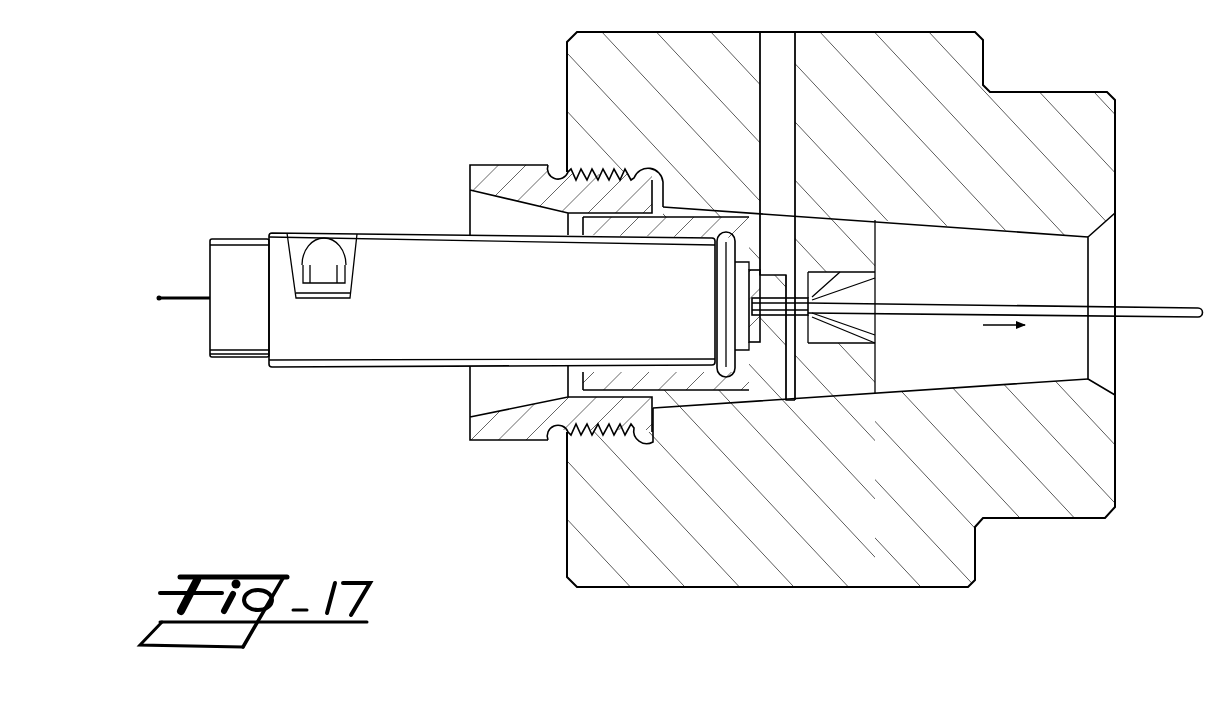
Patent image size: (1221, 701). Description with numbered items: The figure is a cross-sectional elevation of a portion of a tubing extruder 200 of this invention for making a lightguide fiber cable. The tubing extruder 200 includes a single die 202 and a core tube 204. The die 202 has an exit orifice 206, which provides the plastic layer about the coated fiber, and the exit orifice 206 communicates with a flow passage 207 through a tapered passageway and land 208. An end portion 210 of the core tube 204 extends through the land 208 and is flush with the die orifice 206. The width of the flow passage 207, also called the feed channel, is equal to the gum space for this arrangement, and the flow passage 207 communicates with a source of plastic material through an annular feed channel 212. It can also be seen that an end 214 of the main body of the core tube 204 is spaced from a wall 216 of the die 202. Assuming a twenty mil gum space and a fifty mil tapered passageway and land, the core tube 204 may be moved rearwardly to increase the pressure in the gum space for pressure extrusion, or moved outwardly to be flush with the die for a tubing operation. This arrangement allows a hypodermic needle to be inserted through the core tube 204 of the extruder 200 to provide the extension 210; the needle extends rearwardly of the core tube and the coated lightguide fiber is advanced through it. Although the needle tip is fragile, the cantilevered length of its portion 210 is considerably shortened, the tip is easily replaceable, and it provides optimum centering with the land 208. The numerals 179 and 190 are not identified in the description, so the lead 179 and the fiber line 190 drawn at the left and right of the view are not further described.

The electrical lead 179 is at (172, 294).
The optical fiber 190 is at (1152, 303).
The tubing extruder 200 is at (490, 55).
The die 202 is at (832, 212).
The core tube 204 is at (415, 335).
The exit orifice 206 is at (812, 318).
The flow passage 207 is at (808, 282).
The tapered passageway and land 208 is at (812, 322).
The end portion of the core tube 210 is at (808, 290).
The annular feed channel 212 is at (783, 388).
The end of the main body of the core tube 214 is at (740, 347).
The wall of the die 216 is at (755, 248).